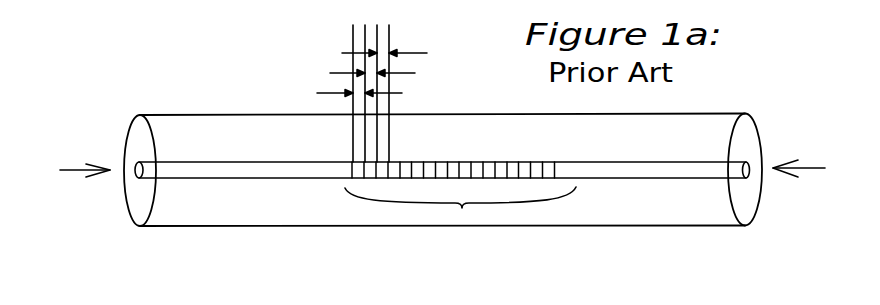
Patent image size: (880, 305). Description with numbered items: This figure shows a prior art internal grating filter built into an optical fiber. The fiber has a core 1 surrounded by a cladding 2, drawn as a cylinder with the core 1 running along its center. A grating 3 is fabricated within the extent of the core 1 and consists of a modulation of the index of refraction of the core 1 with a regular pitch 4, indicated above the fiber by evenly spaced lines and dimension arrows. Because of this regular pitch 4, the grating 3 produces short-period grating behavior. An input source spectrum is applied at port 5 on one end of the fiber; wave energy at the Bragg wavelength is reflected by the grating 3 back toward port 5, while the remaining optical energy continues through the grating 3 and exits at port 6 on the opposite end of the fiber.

The core 1 is at (141, 182).
The cladding 2 is at (141, 113).
The grating 3 is at (462, 208).
The regular pitch 4 is at (320, 52).
The port 5 is at (66, 173).
The port 6 is at (813, 168).